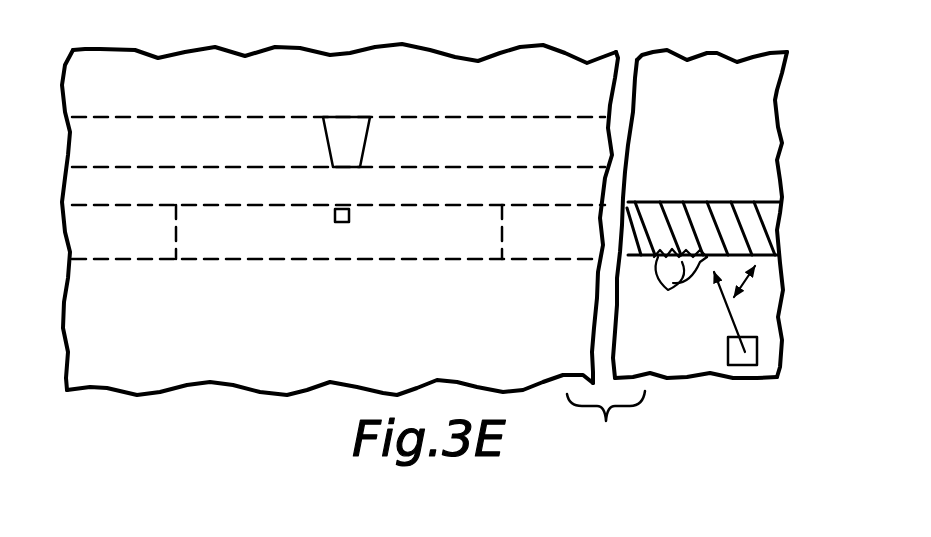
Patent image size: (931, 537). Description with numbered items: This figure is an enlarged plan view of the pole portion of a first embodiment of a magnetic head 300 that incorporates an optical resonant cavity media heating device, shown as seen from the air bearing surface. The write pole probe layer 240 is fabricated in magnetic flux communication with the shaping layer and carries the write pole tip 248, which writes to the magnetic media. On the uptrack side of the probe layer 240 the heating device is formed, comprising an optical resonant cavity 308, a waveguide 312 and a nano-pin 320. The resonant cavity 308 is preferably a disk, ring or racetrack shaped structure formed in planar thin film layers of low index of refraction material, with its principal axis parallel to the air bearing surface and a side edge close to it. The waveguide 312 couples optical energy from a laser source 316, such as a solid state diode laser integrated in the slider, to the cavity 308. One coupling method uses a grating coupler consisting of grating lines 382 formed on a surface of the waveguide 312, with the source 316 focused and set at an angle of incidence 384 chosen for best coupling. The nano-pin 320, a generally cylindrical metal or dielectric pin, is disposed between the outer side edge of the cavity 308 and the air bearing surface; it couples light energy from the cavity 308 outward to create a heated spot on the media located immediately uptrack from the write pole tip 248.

The first embodiment of a magnetic head 300 is at (154, 42).
The write pole probe layer 240 is at (465, 116).
The write pole tip 248 is at (344, 133).
The optical resonant cavity 308 is at (272, 262).
The waveguide 312 is at (587, 262).
The nano-pin 320 is at (345, 222).
The grating lines 382 is at (668, 294).
The angle of incidence 384 is at (755, 283).
The laser source 316 is at (758, 350).